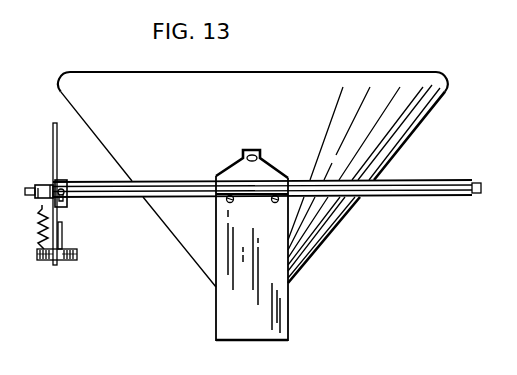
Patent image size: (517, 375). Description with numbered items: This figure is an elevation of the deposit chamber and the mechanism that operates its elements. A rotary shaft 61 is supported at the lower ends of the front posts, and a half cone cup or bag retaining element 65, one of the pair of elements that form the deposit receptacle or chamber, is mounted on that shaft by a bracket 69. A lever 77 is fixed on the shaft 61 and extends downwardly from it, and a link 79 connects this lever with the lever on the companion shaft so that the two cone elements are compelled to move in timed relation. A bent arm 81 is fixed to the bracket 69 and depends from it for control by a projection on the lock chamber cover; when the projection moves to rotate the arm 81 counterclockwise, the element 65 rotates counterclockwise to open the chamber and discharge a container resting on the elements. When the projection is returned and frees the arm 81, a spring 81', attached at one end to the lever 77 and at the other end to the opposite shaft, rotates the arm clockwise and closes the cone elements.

The rotary shaft 61 is at (481, 194).
The half cone cup or bag retaining element 65 is at (88, 128).
The bracket 69 is at (229, 172).
The lever 77 is at (58, 161).
The link 79 is at (64, 231).
The bent arm 81 is at (269, 261).
The spring 81' is at (30, 227).